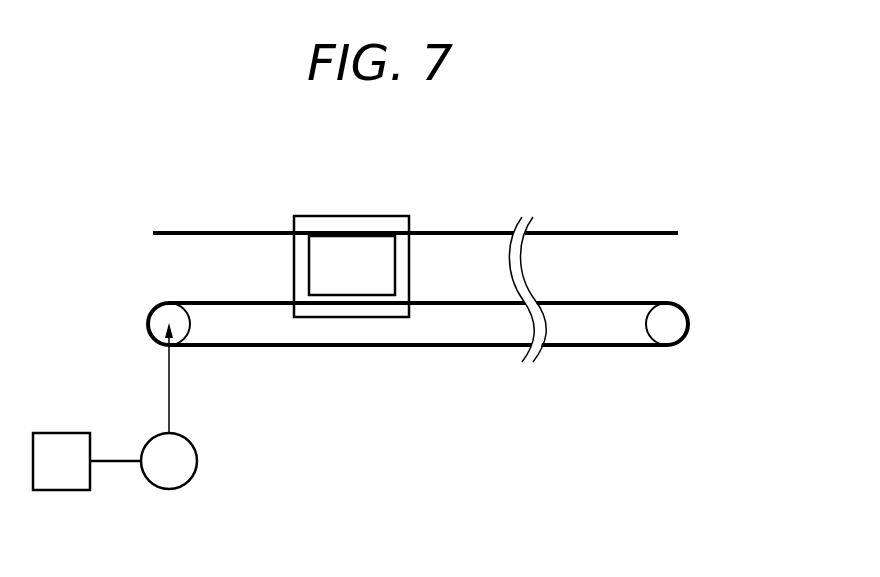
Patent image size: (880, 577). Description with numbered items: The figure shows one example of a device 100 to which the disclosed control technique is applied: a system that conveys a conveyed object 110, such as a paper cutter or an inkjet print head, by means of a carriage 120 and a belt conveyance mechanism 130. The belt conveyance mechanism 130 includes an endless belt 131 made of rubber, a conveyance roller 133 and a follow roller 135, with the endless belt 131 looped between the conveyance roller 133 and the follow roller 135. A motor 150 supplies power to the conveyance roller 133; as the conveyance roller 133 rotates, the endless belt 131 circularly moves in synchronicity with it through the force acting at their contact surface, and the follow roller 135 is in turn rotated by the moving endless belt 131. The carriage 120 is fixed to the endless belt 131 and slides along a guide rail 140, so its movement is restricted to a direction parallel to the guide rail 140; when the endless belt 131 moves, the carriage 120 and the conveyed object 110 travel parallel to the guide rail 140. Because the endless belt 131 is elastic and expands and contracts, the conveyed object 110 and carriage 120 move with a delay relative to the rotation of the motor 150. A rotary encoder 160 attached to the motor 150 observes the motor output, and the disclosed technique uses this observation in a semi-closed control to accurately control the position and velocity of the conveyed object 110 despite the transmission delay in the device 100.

The device 100 is at (617, 186).
The conveyed object 110 is at (360, 265).
The carriage 120 is at (357, 216).
The belt conveyance mechanism 130 is at (577, 361).
The endless belt 131 is at (598, 300).
The conveyance roller 133 is at (155, 339).
The follow roller 135 is at (673, 332).
The guide rail 140 is at (645, 231).
The motor 150 is at (198, 470).
The rotary encoder 160 is at (60, 480).